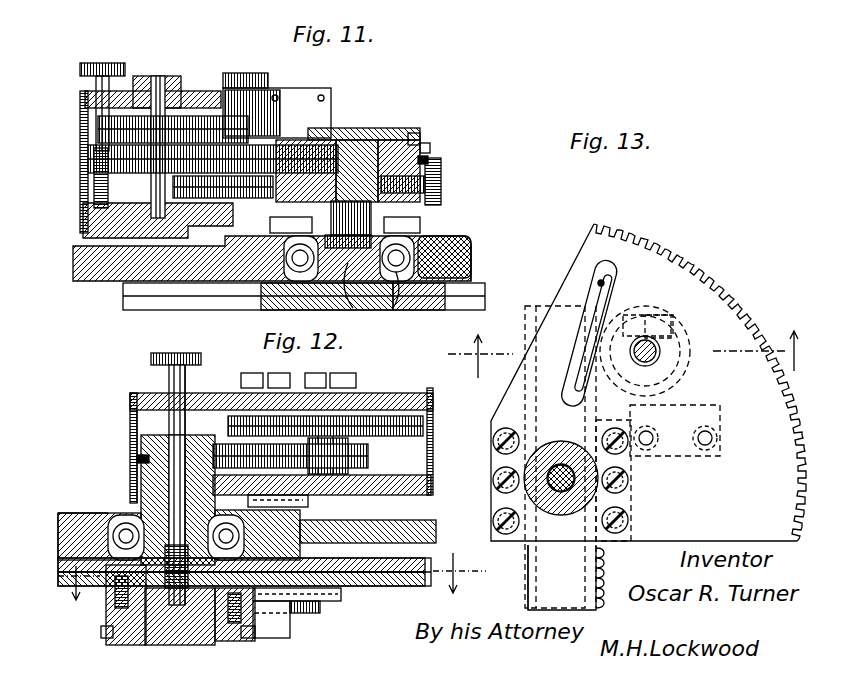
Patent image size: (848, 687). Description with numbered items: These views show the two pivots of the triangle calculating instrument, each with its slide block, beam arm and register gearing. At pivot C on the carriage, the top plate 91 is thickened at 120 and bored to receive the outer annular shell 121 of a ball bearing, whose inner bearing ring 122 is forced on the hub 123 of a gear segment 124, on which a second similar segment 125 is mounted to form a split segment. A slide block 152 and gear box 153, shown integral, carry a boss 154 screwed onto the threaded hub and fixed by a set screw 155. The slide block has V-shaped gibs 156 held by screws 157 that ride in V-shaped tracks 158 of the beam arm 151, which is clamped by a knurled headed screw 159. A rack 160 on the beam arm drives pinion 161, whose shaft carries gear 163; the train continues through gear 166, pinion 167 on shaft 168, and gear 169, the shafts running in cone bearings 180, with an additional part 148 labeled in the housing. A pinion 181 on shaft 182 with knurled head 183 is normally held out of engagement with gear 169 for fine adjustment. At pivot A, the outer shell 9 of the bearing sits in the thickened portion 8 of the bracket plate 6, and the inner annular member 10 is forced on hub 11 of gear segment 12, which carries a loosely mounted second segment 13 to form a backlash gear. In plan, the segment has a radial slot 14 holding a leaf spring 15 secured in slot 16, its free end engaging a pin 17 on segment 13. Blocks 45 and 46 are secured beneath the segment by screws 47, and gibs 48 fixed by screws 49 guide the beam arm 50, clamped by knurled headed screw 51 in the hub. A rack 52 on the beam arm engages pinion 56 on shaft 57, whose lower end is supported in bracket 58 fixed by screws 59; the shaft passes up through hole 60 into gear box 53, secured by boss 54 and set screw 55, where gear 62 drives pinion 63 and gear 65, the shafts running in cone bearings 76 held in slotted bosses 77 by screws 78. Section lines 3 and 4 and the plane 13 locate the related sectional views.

In FIG. 12, the section line 3- 3 is at (459, 564).
In FIG. 13, the section line 4- 4 is at (630, 349).
In FIG. 12, the bracket plate 6 is at (415, 513).
In FIG. 12, the thickened portion 8 is at (53, 517).
In FIG. 12, the outer shell 9 is at (120, 505).
In FIG. 12, the inner annular member 10 is at (130, 500).
In FIG. 12, the hub 11 is at (157, 425).
In FIG. 13, the hub 11 is at (560, 507).
In FIG. 12, the gear segment 12 is at (402, 578).
In FIG. 13, the gear segment 12 is at (644, 382).
In FIG. 12, the second segment 13 is at (440, 530).
In FIG. 13, the radial slot 14 is at (627, 237).
In FIG. 13, the leaf spring 15 is at (597, 281).
In FIG. 13, the slot 16 is at (565, 395).
In FIG. 13, the pin 17 is at (595, 272).
In FIG. 12, the block 45 is at (97, 612).
In FIG. 12, the block 46 is at (250, 630).
In FIG. 12, the screws 47 is at (100, 577).
In FIG. 13, the screws 47 is at (620, 512).
In FIG. 12, the gibs 48 is at (128, 637).
In FIG. 12, the screws 49 is at (93, 628).
In FIG. 12, the beam arm 50 is at (163, 637).
In FIG. 13, the beam arm 50 is at (530, 560).
In FIG. 12, the knurled headed screw 51 is at (183, 378).
In FIG. 13, the knurled headed screw 51 is at (565, 470).
In FIG. 12, the rack 52 is at (183, 627).
In FIG. 13, the rack 52 is at (594, 558).
In FIG. 12, the gear box 53 is at (395, 393).
In FIG. 12, the boss 54 is at (135, 435).
In FIG. 12, the set screw 55 is at (135, 451).
In FIG. 12, the pinion 56 is at (292, 603).
In FIG. 13, the pinion 56 is at (750, 370).
In FIG. 12, the shaft 57 is at (300, 495).
In FIG. 13, the shaft 57 is at (655, 330).
In FIG. 12, the bracket 58 is at (265, 622).
In FIG. 13, the bracket 58 is at (678, 450).
In FIG. 13, the screws 59 is at (710, 428).
In FIG. 13, the hole 60 is at (652, 347).
In FIG. 12, the gear 62 is at (415, 447).
In FIG. 12, the pinion 63 is at (355, 442).
In FIG. 12, the gear 65 is at (410, 415).
In FIG. 12, the cone bearings 76 is at (330, 480).
In FIG. 12, the slotted bosses 77 is at (342, 380).
In FIG. 12, the screws 78 is at (350, 372).
In FIG. 11, the top plate 91 is at (105, 262).
In FIG. 11, the thickened portion 120 is at (467, 233).
In FIG. 11, the outer annular shell 121 is at (380, 237).
In FIG. 11, the inner bearing ring 122 is at (385, 300).
In FIG. 11, the hub 123 is at (395, 222).
In FIG. 11, the gear segment 124 is at (478, 287).
In FIG. 11, the second segment 125 is at (463, 275).
In FIG. 11, the threaded shaft 148 is at (90, 170).
In FIG. 11, the beam arm 151 is at (352, 135).
In FIG. 11, the slide block 152 is at (420, 137).
In FIG. 11, the gear box 153 is at (195, 80).
In FIG. 11, the boss 154 is at (291, 218).
In FIG. 11, the set screw 155 is at (374, 224).
In FIG. 11, the gibs 156 is at (290, 135).
In FIG. 11, the screws 157 is at (420, 146).
In FIG. 11, the tracks 158 is at (310, 135).
In FIG. 11, the knurled headed screw 159 is at (440, 160).
In FIG. 11, the rack 160 is at (370, 128).
In FIG. 11, the pinion 161 is at (205, 190).
In FIG. 11, the gear 163 is at (268, 118).
In FIG. 11, the gear 166 is at (213, 100).
In FIG. 11, the pinion 167 is at (117, 83).
In FIG. 11, the shaft 168 is at (145, 182).
In FIG. 11, the gear 169 is at (114, 152).
In FIG. 11, the cone bearings 180 is at (152, 70).
In FIG. 11, the pinion 181 is at (80, 138).
In FIG. 11, the shaft 182 is at (90, 98).
In FIG. 11, the knurled head 183 is at (92, 55).
In FIG. 12, the pivot A is at (155, 428).
In FIG. 11, the pivot C is at (349, 300).